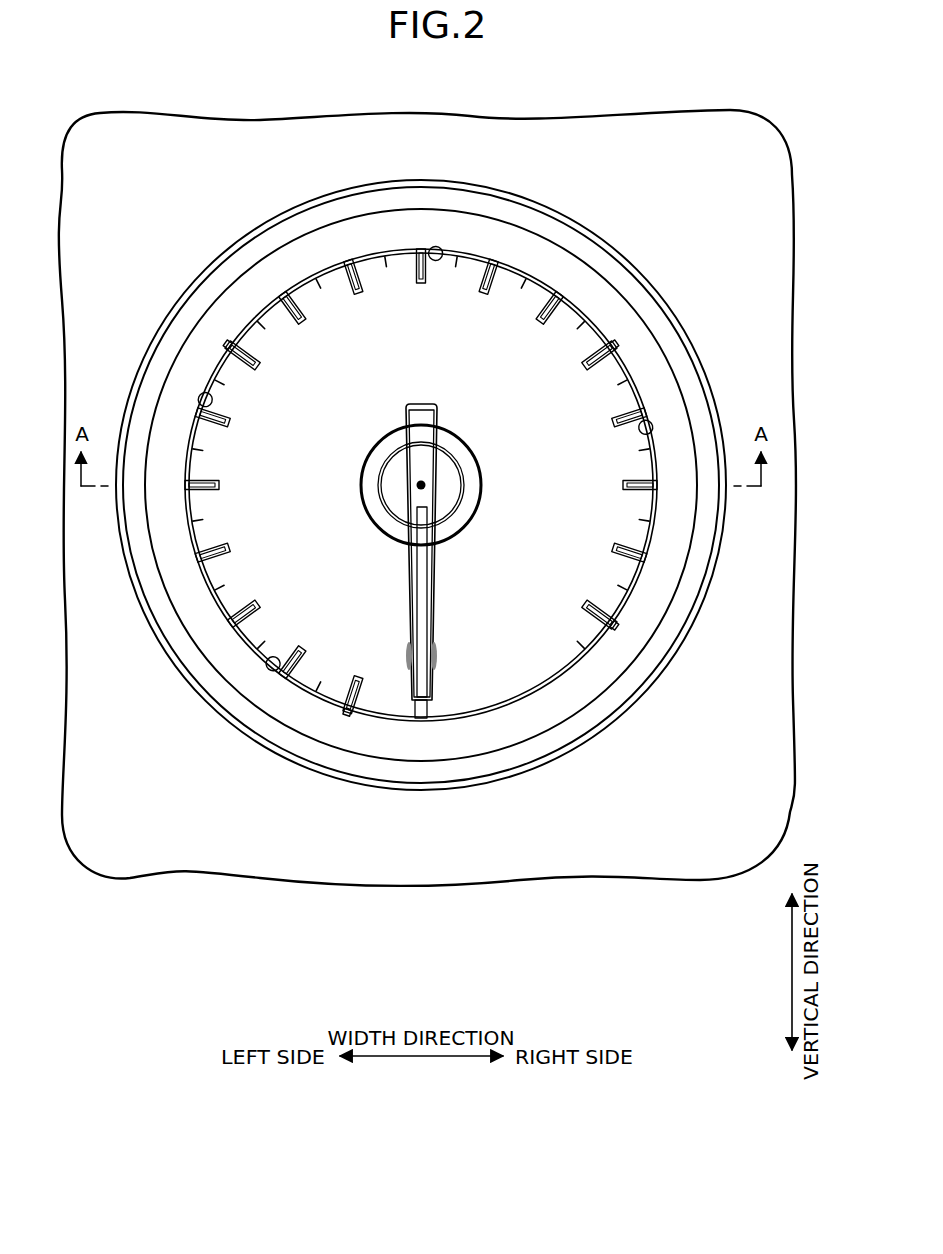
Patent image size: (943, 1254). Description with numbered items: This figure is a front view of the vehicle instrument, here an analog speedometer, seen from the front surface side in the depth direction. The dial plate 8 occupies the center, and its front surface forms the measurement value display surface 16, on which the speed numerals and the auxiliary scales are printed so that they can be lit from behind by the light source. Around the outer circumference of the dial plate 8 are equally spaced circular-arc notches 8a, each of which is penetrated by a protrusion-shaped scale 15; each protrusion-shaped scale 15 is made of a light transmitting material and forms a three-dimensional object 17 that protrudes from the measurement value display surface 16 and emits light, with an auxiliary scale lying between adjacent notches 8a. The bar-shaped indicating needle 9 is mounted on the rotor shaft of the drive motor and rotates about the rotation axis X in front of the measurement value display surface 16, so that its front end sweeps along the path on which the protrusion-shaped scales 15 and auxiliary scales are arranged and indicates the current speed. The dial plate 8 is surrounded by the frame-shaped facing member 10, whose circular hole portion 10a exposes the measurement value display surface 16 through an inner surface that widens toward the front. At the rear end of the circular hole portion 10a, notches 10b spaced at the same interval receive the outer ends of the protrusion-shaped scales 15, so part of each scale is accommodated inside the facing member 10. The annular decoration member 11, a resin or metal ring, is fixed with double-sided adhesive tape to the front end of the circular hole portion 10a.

The dial plate 8 is at (574, 318).
The notch 8a is at (232, 342).
The indicating needle 9 is at (442, 632).
The facing member 10 is at (694, 137).
The circular hole portion 10a is at (667, 547).
The notch 10b is at (440, 256).
The annular decoration member 11 is at (603, 737).
The protrusion-shaped scale 15 is at (417, 530).
The measurement value display surface 16 is at (348, 386).
The three-dimensional object 17 is at (604, 360).
The rotation axis X is at (427, 486).